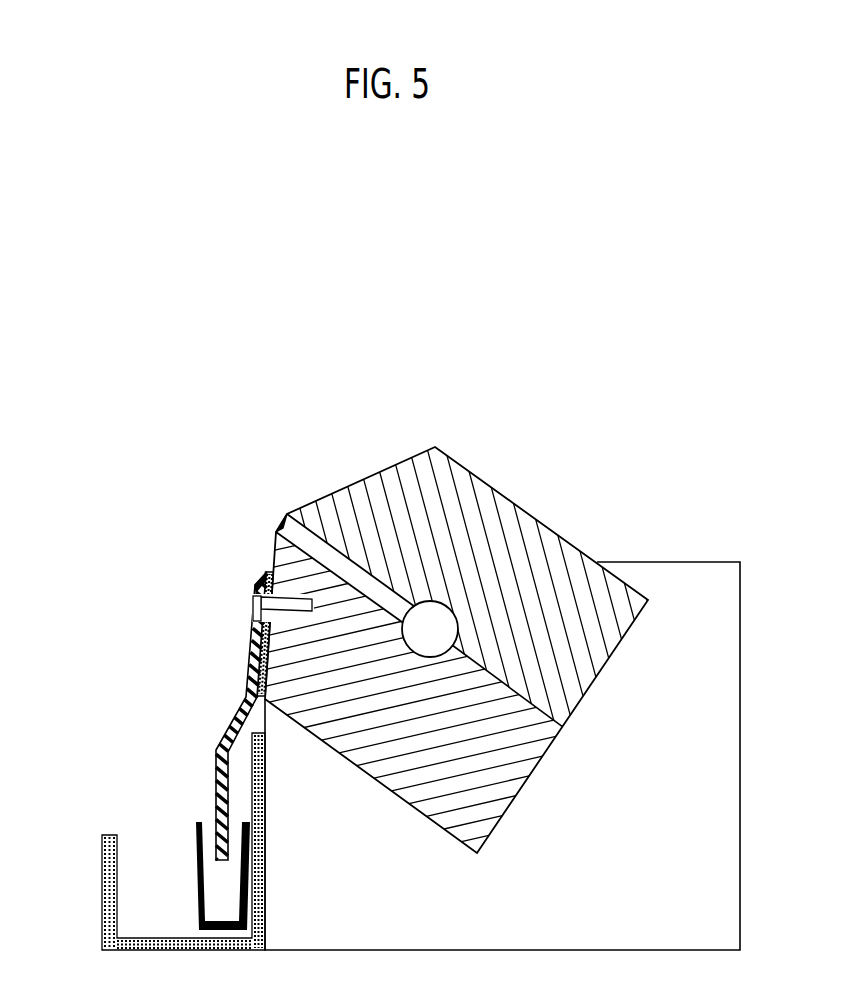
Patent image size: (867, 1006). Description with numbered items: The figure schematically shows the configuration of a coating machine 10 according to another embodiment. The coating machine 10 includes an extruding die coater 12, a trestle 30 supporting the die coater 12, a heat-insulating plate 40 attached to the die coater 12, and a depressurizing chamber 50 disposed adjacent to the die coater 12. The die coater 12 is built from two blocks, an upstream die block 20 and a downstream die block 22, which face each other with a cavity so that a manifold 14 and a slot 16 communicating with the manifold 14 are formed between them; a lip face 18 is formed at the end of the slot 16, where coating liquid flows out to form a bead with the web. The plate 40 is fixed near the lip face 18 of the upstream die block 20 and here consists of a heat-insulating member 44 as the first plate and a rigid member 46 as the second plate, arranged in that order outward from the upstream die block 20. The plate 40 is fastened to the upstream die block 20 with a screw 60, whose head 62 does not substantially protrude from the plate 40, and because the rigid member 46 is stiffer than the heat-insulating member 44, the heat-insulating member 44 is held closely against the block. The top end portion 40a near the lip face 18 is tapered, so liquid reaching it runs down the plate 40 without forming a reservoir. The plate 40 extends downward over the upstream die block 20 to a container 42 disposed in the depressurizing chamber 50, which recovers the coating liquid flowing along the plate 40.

The coating machine 10 is at (428, 313).
The extruding die coater 12 is at (443, 436).
The manifold 14 is at (440, 617).
The slot 16 is at (328, 543).
The lip face 18 is at (287, 514).
The upstream die block 20 is at (430, 808).
The downstream die block 22 is at (566, 548).
The trestle 30 is at (741, 848).
The heat-insulating plate 40 is at (155, 660).
The top end portion 40a is at (255, 575).
The container 42 is at (198, 880).
The heat-insulating member 44 is at (256, 665).
The rigid member 46 is at (262, 692).
The depressurizing chamber 50 is at (102, 886).
The screw 60 is at (249, 603).
The head 62 is at (248, 621).